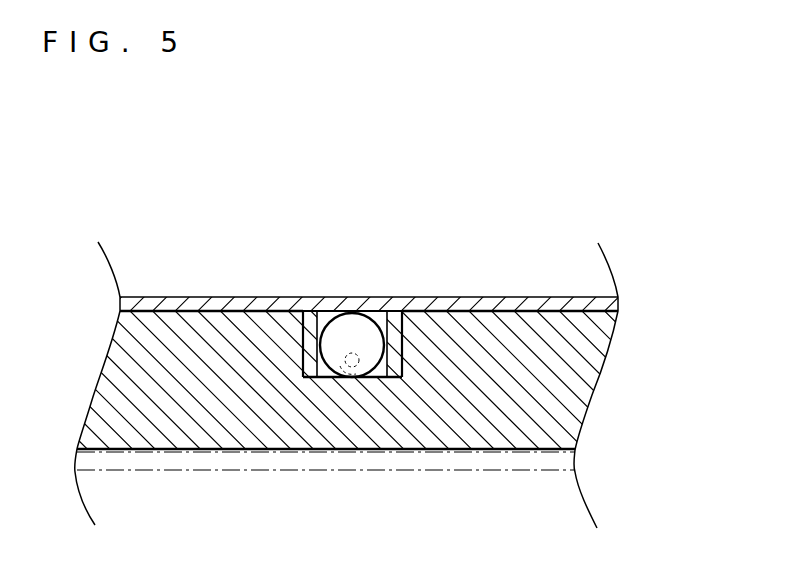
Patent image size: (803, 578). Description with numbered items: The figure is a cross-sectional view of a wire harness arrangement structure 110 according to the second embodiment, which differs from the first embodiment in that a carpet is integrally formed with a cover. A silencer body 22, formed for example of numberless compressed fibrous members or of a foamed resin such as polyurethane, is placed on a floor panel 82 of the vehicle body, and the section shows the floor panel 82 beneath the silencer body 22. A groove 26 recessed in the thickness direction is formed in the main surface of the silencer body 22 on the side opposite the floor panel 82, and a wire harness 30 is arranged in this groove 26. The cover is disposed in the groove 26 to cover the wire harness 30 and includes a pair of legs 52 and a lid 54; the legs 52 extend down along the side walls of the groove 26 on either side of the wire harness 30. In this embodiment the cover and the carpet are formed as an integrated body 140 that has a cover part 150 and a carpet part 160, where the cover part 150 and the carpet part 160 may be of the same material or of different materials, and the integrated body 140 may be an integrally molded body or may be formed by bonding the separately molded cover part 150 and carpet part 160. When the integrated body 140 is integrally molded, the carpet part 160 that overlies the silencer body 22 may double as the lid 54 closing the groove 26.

The wire harness arrangement structure 110 is at (146, 172).
The silencer body 22 is at (585, 377).
The groove 26 is at (379, 372).
The wire harness 30 is at (343, 370).
The legs 52 is at (302, 330).
The lid 54 is at (337, 305).
The floor panel 82 is at (478, 470).
The integrated body 140 is at (465, 286).
The cover part 150 is at (384, 318).
The carpet part 160 is at (540, 305).